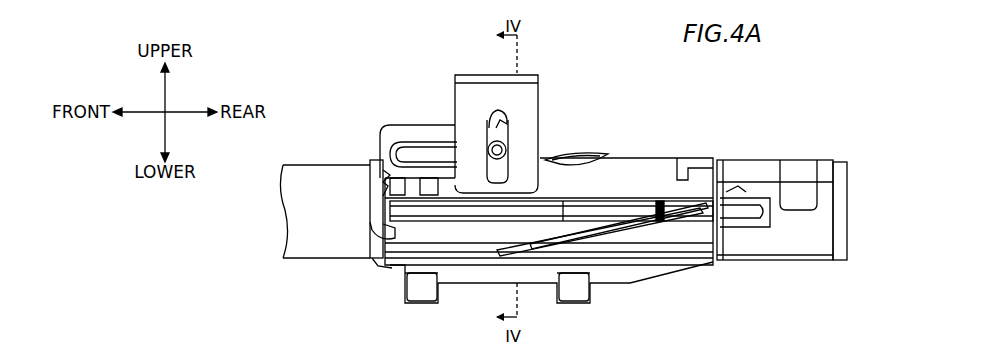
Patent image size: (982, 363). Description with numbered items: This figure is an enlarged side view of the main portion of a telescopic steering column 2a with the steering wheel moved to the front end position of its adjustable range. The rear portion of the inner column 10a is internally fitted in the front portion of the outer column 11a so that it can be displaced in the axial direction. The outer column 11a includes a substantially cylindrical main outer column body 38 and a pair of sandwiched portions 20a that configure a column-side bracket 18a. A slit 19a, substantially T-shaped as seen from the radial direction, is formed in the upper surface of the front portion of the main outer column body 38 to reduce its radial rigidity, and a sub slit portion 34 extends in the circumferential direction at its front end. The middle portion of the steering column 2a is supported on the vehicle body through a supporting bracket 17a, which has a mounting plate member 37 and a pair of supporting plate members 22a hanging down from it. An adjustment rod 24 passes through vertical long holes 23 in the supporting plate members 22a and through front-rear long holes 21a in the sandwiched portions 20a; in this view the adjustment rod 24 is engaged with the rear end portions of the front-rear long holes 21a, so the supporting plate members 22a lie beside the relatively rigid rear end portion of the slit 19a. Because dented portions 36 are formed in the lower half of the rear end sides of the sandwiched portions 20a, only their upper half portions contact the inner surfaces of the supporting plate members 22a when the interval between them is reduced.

The steering column 2a is at (678, 138).
The inner column 10a is at (293, 258).
The outer column 11a is at (610, 292).
The supporting bracket 17a is at (443, 60).
The column-side bracket 18a is at (387, 88).
The slit 19a is at (393, 232).
The sandwiched portion 20a is at (390, 127).
The front-rear long hole 21a is at (413, 147).
The supporting plate member 22a is at (533, 105).
The vertical long hole 23 is at (503, 127).
The adjustment rod 24 is at (487, 147).
The sub slit portion 34 is at (383, 173).
The dented portion 36 is at (500, 176).
The mounting plate member 37 is at (464, 78).
The main outer column body 38 is at (641, 170).